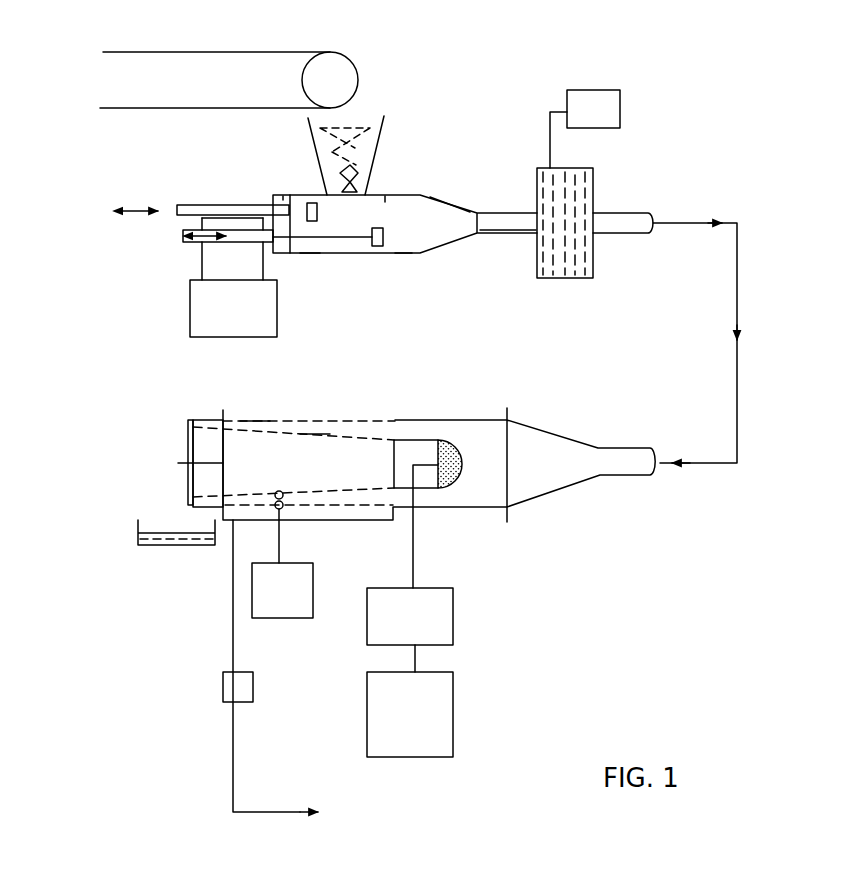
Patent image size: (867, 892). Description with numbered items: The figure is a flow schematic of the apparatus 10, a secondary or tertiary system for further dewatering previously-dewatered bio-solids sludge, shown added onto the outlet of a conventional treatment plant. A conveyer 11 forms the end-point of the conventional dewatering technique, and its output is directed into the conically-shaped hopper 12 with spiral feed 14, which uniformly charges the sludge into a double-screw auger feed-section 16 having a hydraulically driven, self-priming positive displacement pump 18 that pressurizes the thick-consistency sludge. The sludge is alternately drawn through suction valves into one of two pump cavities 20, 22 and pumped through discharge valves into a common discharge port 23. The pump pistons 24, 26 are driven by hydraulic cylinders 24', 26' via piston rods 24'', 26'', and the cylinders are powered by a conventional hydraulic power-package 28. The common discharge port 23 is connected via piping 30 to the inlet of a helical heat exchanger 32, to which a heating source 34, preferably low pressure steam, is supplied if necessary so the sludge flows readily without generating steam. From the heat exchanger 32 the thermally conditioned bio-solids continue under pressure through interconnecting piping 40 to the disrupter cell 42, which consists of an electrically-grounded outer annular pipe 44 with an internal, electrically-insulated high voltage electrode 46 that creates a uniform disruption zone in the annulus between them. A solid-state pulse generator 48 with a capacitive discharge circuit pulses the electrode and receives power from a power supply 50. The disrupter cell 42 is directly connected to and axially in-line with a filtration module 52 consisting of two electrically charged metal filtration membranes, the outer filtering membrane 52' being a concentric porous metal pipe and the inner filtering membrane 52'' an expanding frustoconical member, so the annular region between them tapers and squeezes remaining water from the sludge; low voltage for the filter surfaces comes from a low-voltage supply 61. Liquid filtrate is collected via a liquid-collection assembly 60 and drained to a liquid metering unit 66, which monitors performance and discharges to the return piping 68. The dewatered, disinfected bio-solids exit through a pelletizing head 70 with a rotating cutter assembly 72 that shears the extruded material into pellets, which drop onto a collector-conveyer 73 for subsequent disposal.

The apparatus 10 is at (764, 145).
The conveyer 11 is at (226, 45).
The conically-shaped hopper 12 is at (391, 114).
The spiral feed 14 is at (360, 146).
The double-screw auger feed-section 16 is at (404, 182).
The self-priming positive displacement pump 18 is at (258, 194).
The pump cavity 20 is at (385, 200).
The pump cavity 22 is at (403, 254).
The common discharge port 23 is at (442, 212).
The pump piston 24 is at (337, 215).
The hydraulic cylinder 24' is at (205, 188).
The piston rod 24'' is at (291, 169).
The pump piston 26 is at (358, 227).
The hydraulic cylinder 26' is at (191, 239).
The piston rod 26'' is at (313, 282).
The hydraulic power-package 28 is at (190, 305).
The piping 30 is at (525, 236).
The helical heat exchanger 32 is at (594, 193).
The heating source 34 is at (620, 100).
The interconnecting piping 40 is at (742, 245).
The disrupter cell 42 is at (484, 419).
The annular pipe 44 is at (453, 420).
The high voltage electrode 46 is at (461, 484).
The pulse generator 48 is at (456, 630).
The power supply 50 is at (456, 722).
The filtration module 52 is at (305, 410).
The outer filtering membrane 52' is at (295, 386).
The inner filtering membrane 52'' is at (369, 407).
The liquid-collection assembly 60 is at (232, 621).
The low-voltage supply 61 is at (316, 581).
The liquid metering unit 66 is at (222, 680).
The return piping 68 is at (290, 805).
The pelletizing head 70 is at (206, 416).
The rotating cutter assembly 72 is at (188, 440).
The collector-conveyer 73 is at (186, 534).